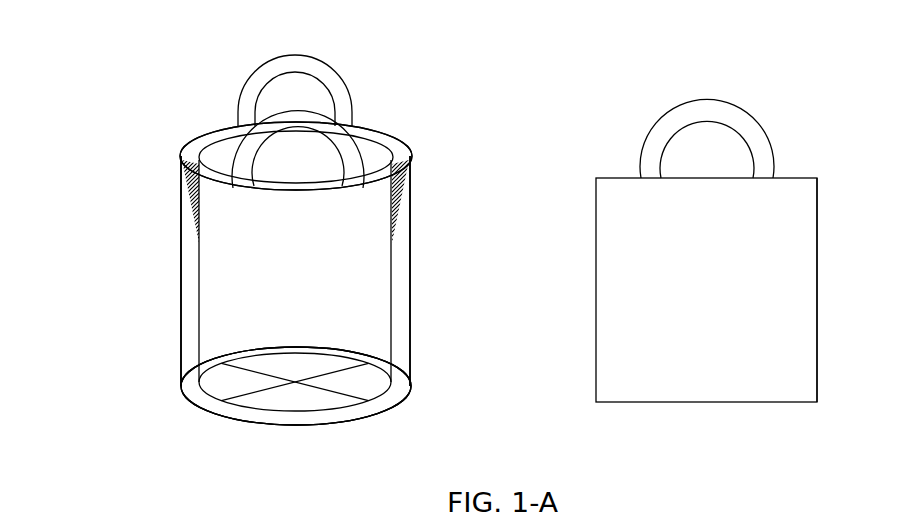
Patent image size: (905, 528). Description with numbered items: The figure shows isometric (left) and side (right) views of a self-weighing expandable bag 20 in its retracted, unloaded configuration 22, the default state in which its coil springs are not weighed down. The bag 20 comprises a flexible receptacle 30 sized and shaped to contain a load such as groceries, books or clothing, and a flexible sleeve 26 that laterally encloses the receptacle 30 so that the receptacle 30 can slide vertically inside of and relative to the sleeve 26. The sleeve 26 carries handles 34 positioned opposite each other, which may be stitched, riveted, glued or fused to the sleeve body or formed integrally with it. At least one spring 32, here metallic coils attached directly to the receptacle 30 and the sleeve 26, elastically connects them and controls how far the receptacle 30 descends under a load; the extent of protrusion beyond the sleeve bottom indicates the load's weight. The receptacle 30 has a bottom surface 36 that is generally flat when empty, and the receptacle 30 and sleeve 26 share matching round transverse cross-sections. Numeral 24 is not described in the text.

The self-weighing expandable bag 20 is at (103, 263).
The retracted configuration 22 is at (136, 480).
The flat panel blank 24 is at (778, 446).
The flexible sleeve 26 is at (180, 329).
The flexible receptacle 30 is at (200, 148).
The spring 32 is at (192, 203).
The handle 34 is at (293, 54).
The bottom surface 36 is at (213, 402).